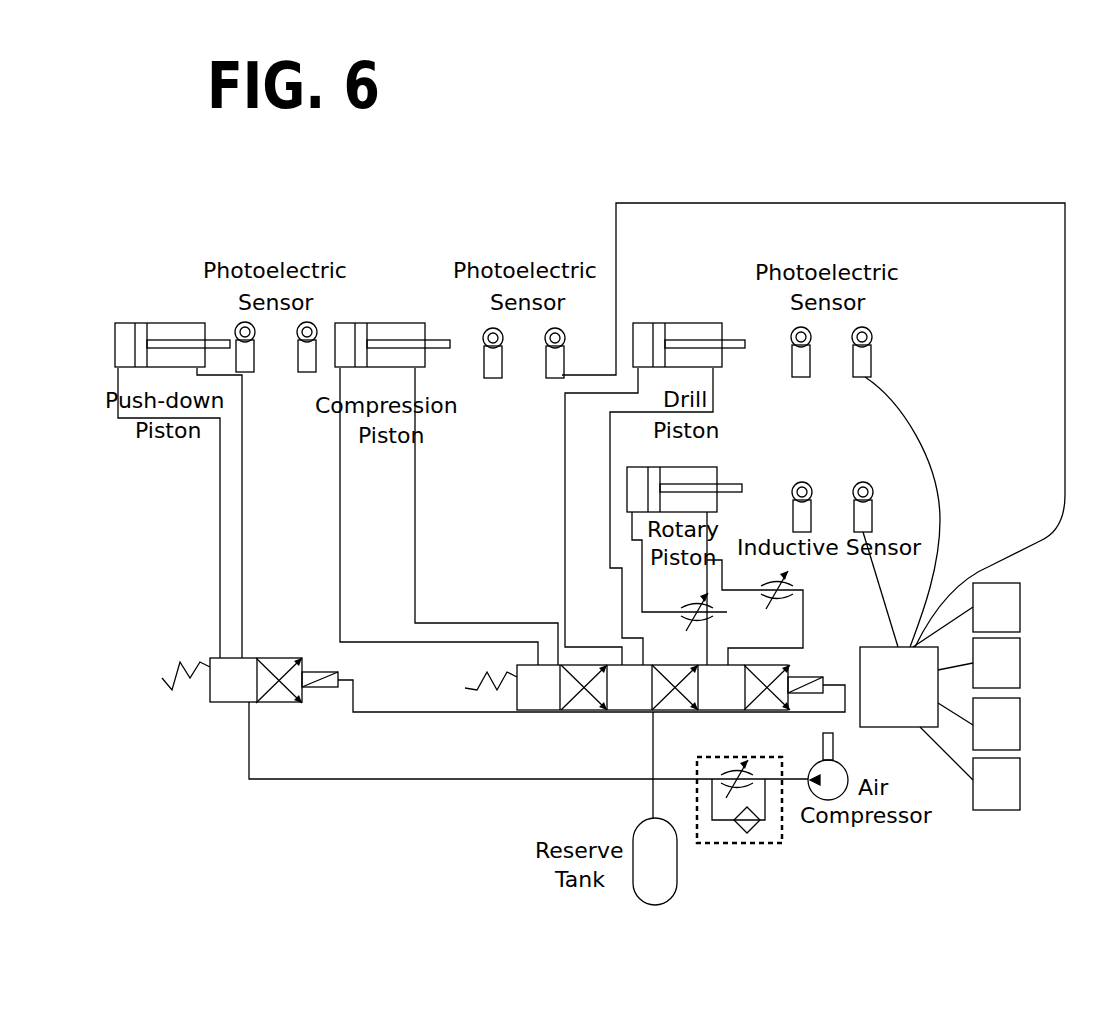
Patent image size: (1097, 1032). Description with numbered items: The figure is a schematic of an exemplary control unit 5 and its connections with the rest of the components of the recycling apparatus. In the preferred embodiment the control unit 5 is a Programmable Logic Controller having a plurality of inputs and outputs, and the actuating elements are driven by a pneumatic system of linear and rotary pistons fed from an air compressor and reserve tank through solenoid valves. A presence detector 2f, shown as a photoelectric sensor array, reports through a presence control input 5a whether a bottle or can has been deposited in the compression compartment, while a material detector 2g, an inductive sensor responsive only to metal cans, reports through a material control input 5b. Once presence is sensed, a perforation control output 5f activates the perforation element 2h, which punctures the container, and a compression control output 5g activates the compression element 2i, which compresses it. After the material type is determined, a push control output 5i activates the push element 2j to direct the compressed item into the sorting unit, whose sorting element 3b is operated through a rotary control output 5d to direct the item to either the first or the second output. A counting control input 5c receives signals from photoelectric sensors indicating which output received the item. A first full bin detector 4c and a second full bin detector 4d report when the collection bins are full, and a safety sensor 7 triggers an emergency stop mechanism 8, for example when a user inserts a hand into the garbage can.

The push element 2j is at (165, 337).
The compression element 2i is at (370, 337).
The perforation element 2h is at (695, 340).
The sorting element 3b is at (683, 473).
The presence detector 2f is at (830, 357).
The material detector 2g is at (838, 518).
The control unit 5 is at (913, 709).
The presence control input 5a is at (913, 512).
The material control input 5b is at (870, 589).
The counting control input 5c is at (813, 408).
The rotary control output 5d is at (644, 611).
The perforation control output 5f is at (639, 516).
The compression control output 5g is at (449, 516).
The push control output 5i is at (481, 573).
The safety sensor 7 is at (1005, 620).
The emergency stop mechanism 8 is at (1005, 676).
The first full bin detector 4c is at (1012, 738).
The second full bin detector 4d is at (1012, 798).